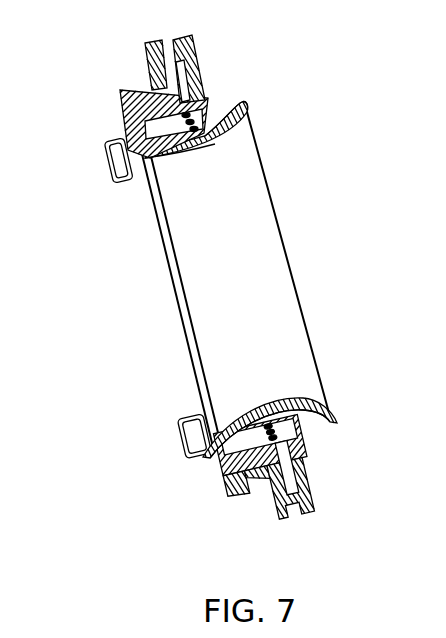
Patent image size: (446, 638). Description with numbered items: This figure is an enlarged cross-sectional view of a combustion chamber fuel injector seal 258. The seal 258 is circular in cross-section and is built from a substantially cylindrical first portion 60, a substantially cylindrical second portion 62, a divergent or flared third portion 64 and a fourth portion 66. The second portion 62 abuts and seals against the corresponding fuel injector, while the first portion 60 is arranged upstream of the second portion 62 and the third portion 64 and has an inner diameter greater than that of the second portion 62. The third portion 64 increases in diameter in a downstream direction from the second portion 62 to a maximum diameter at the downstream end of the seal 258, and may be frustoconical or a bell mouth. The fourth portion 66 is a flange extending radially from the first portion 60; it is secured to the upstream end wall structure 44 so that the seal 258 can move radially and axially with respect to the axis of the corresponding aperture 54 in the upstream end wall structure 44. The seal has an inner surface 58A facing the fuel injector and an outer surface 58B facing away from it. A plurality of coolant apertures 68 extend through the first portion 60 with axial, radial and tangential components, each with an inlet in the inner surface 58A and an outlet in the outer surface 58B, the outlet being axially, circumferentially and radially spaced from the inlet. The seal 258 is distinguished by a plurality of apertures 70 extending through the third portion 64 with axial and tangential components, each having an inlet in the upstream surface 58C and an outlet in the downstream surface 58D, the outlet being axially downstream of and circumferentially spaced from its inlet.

The upstream end wall structure 44 is at (337, 497).
The aperture 54 is at (293, 424).
The inner surface 58A is at (203, 150).
The outer surface 58B is at (215, 128).
The upstream surface 58C is at (294, 401).
The downstream surface 58D is at (250, 112).
The first portion 60 is at (240, 414).
The second portion 62 is at (242, 133).
The third portion 64 is at (238, 127).
The fourth portion 66 is at (223, 480).
The coolant apertures 68 is at (178, 152).
The apertures 70 is at (219, 130).
The seal 258 is at (333, 423).